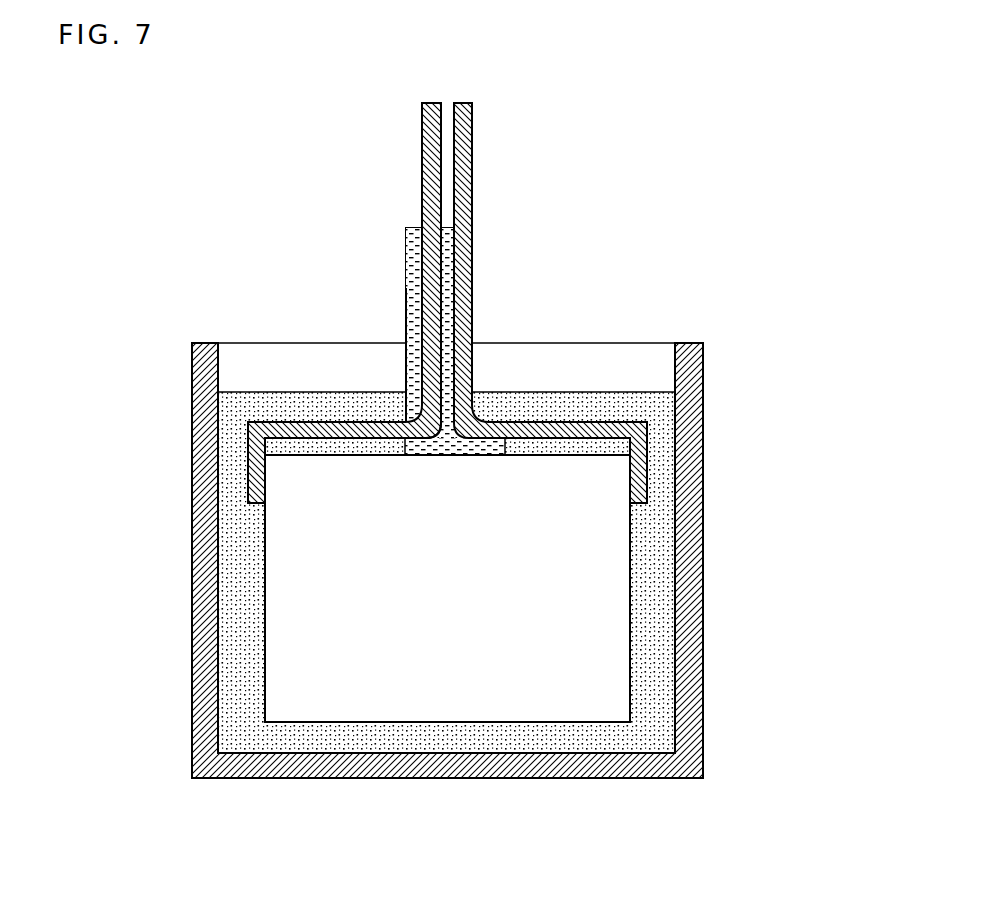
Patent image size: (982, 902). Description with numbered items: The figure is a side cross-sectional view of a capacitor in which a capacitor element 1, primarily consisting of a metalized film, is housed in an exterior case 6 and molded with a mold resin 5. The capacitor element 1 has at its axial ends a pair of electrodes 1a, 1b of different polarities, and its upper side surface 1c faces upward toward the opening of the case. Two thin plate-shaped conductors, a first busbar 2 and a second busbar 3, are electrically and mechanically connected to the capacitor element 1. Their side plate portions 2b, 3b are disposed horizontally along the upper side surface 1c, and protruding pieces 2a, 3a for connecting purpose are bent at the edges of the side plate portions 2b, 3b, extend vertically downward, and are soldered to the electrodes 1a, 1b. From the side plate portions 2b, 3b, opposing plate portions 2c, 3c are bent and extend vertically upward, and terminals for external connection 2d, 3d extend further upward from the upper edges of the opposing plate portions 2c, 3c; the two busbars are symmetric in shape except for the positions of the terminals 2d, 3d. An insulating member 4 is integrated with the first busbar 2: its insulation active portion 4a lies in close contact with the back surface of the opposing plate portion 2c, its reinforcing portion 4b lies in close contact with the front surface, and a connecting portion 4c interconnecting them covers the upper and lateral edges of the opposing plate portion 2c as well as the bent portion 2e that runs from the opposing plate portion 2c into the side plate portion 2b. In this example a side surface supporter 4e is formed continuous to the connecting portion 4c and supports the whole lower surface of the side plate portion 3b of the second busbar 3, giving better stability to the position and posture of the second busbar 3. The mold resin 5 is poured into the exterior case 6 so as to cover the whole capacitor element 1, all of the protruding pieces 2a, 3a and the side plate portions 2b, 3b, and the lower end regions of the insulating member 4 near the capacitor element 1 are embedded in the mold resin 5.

The capacitor element 1 is at (331, 662).
The electrode 1a is at (263, 580).
The electrode 1b is at (630, 640).
The upper side surface 1c is at (365, 438).
The first busbar 2 is at (410, 200).
The protruding pieces for connecting purpose 2a is at (246, 475).
The side plate portion 2b is at (318, 422).
The opposing plate portion 2c is at (432, 290).
The terminal for external connection 2d is at (423, 130).
The bent portion 2e is at (418, 440).
The second busbar 3 is at (480, 200).
The protruding pieces for connecting purpose 3a is at (648, 472).
The side plate portion 3b is at (592, 420).
The opposing plate portion 3c is at (472, 292).
The terminal for external connection 3d is at (466, 133).
The insulating member 4 is at (402, 223).
The insulation active portion 4a is at (446, 272).
The reinforcing portion 4b is at (414, 255).
The connecting portion 4c is at (436, 446).
The side surface supporter 4e is at (482, 440).
The mold resin 5 is at (545, 405).
The exterior case 6 is at (690, 548).